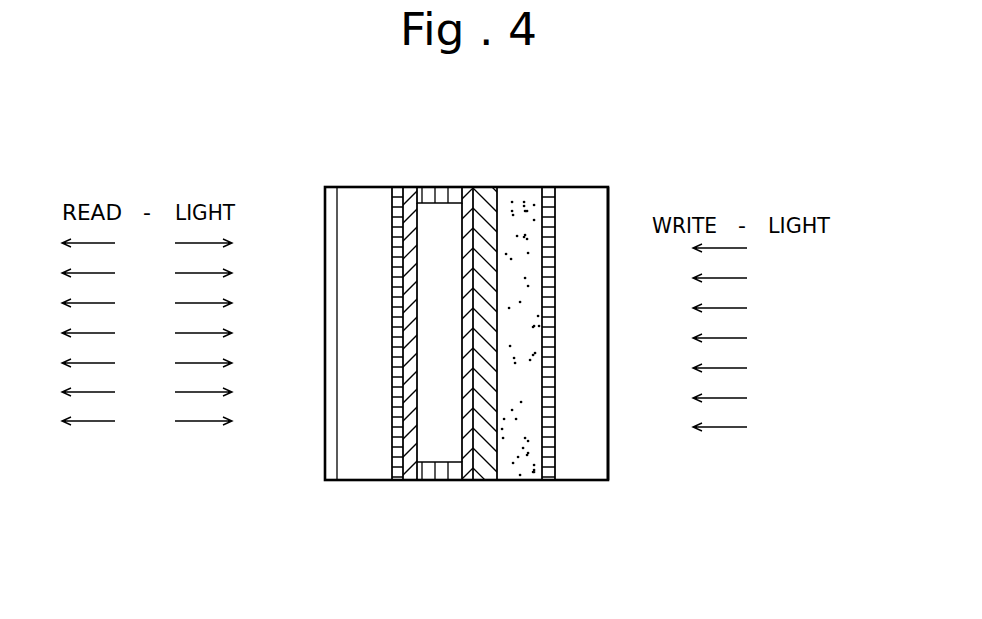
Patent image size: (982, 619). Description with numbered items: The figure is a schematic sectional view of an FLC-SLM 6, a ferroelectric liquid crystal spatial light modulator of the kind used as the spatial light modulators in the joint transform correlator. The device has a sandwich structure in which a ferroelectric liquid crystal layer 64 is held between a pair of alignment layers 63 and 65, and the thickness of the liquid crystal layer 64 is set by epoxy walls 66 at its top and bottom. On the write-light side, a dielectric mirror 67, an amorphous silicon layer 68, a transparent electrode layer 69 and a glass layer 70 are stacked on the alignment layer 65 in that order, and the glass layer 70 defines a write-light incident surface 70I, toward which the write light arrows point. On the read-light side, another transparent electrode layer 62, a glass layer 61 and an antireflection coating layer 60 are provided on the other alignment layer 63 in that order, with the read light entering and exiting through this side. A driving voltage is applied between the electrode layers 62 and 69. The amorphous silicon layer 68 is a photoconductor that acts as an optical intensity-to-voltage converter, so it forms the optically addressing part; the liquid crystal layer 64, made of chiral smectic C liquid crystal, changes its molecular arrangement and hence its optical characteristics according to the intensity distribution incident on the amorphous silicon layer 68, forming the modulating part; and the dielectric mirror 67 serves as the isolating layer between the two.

The FLC-SLM 6 is at (616, 146).
The antireflection coating layer 60 is at (327, 422).
The glass layer 61 is at (360, 196).
The transparent electrode layer 62 is at (399, 192).
The alignment layer 63 is at (413, 479).
The ferroelectric liquid crystal layer 64 is at (427, 440).
The alignment layer 65 is at (470, 479).
The epoxy walls 66 is at (440, 197).
The dielectric mirror 67 is at (491, 195).
The amorphous silicon layer 68 is at (518, 479).
The transparent electrode layer 69 is at (551, 195).
The glass layer 70 is at (601, 447).
The write-light incident surface 70I is at (610, 226).